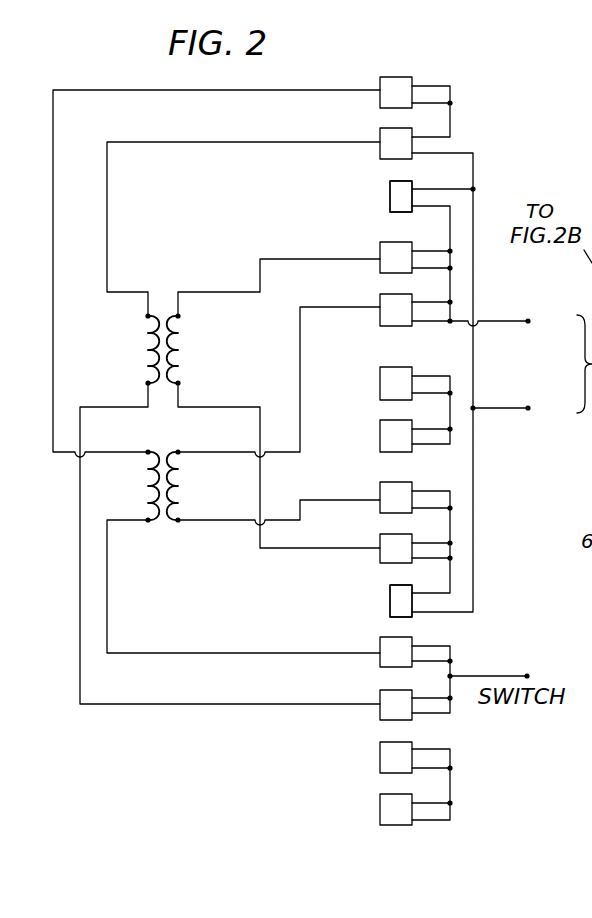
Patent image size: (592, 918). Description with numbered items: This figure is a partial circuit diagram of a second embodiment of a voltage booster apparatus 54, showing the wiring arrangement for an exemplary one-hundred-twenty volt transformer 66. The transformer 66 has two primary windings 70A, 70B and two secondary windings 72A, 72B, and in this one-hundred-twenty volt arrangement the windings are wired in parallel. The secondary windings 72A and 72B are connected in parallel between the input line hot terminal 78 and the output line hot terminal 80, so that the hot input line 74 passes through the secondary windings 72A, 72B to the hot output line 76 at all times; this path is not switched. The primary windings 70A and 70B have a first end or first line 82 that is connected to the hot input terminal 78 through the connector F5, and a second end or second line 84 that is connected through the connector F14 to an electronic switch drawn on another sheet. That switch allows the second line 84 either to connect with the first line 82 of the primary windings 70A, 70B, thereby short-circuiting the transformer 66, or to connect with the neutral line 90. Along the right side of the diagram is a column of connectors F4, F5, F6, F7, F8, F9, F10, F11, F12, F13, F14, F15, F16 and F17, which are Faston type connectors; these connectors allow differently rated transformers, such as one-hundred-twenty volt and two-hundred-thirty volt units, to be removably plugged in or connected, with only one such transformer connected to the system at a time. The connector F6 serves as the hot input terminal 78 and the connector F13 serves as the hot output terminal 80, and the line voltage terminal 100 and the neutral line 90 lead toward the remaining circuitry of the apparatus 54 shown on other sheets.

The voltage booster apparatus 54 is at (572, 61).
The 120 Volt transformer 66 is at (60, 557).
The primary winding 70A is at (143, 348).
The secondary winding 72A is at (188, 352).
The primary winding 70B is at (143, 490).
The secondary winding 72B is at (183, 490).
The hot input line 74 is at (221, 292).
The hot output line 76 is at (218, 524).
The input line hot terminal 78 is at (389, 198).
The output line hot terminal 80 is at (389, 598).
The first line 82 is at (107, 214).
The second line 84 is at (107, 606).
The neutral line 90 is at (504, 408).
The line voltage terminal 100 is at (507, 318).
The connector F4 is at (379, 99).
The connector F5 is at (379, 152).
The connector F6 is at (413, 182).
The connector F7 is at (379, 267).
The connector F8 is at (379, 320).
The connector F9 is at (379, 379).
The connector F10 is at (379, 431).
The connector F11 is at (379, 508).
The connector F12 is at (379, 559).
The connector F13 is at (413, 603).
The connector F14 is at (379, 664).
The connector F15 is at (379, 715).
The connector F16 is at (379, 758).
The connector F17 is at (379, 805).